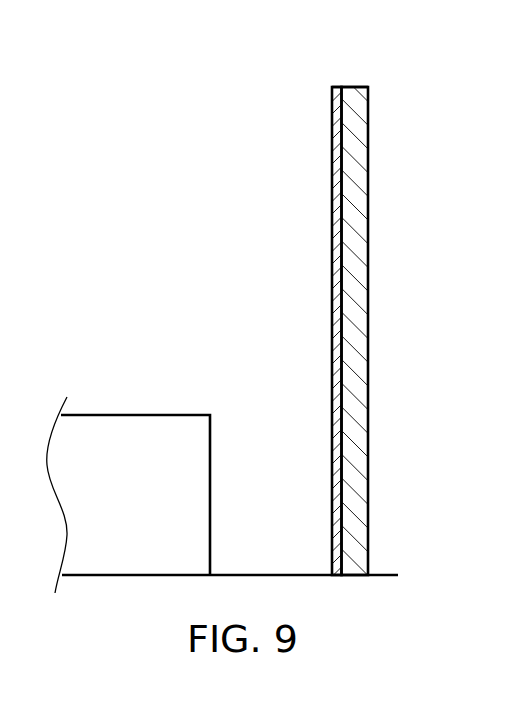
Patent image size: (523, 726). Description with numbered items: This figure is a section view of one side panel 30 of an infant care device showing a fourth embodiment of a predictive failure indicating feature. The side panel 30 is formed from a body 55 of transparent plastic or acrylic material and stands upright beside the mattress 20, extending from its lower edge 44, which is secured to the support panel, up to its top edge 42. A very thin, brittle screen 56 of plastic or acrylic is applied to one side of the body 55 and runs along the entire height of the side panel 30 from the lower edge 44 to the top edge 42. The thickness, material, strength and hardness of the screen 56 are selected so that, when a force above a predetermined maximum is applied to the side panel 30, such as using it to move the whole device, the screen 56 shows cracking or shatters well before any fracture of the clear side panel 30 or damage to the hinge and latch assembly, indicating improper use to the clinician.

The mattress 20 is at (157, 433).
The side panel 30 is at (367, 298).
The top edge 42 is at (350, 87).
The lower edge 44 is at (369, 558).
The body 55 is at (355, 390).
The screen 56 is at (338, 317).